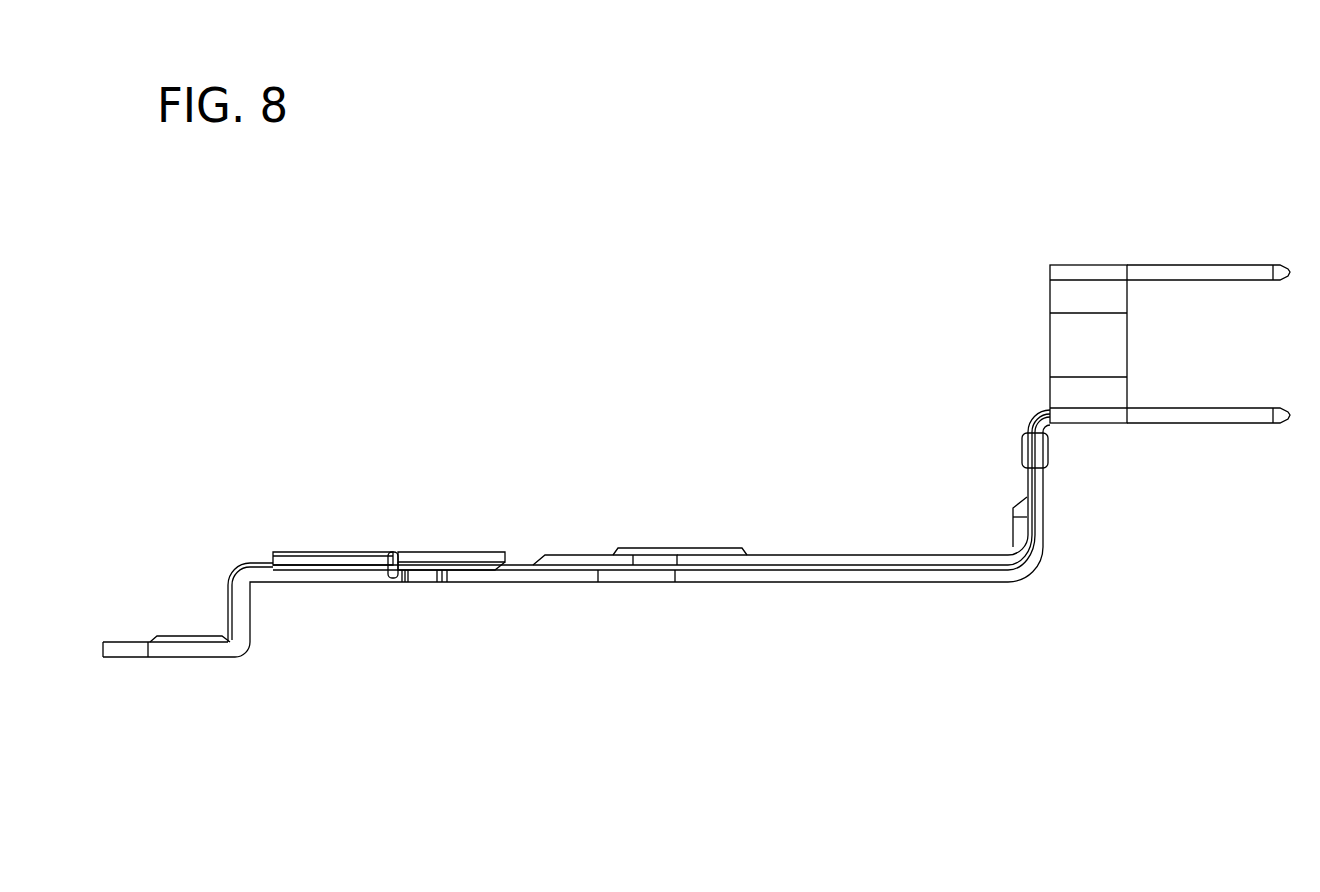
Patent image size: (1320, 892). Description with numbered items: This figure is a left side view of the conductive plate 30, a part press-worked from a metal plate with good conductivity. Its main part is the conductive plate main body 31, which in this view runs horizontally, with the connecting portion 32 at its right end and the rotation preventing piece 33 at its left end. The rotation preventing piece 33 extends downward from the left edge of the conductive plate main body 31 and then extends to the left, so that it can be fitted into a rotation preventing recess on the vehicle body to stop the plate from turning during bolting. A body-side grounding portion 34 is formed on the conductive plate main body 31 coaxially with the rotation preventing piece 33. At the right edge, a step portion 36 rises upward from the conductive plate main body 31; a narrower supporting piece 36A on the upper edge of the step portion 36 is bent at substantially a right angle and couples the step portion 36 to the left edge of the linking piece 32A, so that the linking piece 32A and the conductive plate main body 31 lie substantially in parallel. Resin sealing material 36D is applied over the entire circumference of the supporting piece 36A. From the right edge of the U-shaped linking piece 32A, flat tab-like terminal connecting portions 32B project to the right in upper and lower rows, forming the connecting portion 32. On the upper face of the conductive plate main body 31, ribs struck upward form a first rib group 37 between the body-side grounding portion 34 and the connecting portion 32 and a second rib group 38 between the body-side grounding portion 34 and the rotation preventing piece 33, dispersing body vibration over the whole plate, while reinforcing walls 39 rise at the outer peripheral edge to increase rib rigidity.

The conductive plate 30 is at (747, 257).
The conductive plate main body 31 is at (588, 430).
The connecting portion 32 is at (1139, 217).
The linking portion 32A is at (1095, 330).
The terminal connecting portions 32B is at (1223, 272).
The rotation preventing piece 33 is at (125, 648).
The body-side grounding portion 34 is at (692, 552).
The step portion 36 is at (1035, 480).
The supporting piece 36A is at (1040, 415).
The sealing material 36D is at (1025, 447).
The first rib group 37 is at (877, 555).
The second rib group 38 is at (406, 560).
The reinforcing walls 39 is at (322, 560).